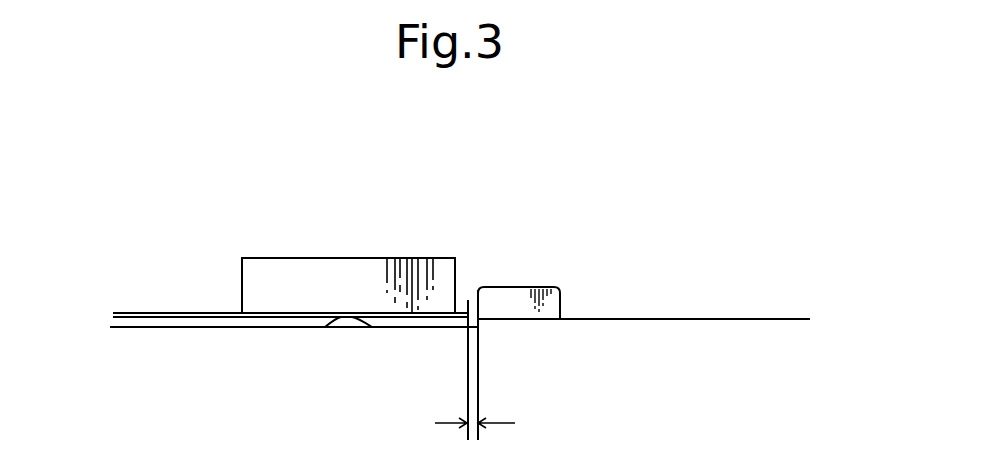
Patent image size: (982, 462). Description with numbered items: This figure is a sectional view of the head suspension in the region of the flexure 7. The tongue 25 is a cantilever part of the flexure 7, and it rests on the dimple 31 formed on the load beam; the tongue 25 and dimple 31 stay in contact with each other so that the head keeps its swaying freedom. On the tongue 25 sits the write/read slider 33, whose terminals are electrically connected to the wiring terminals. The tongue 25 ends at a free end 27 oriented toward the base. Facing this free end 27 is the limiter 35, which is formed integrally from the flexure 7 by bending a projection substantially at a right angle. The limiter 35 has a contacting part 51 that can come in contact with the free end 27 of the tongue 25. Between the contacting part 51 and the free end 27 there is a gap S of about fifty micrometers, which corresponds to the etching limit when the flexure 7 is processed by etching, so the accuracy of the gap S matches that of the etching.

The flexure 7 is at (654, 316).
The tongue 25 is at (158, 313).
The free end 27 is at (468, 302).
The dimple 31 is at (334, 317).
The write/read slider 33 is at (372, 257).
The limiter 35 is at (522, 287).
The contacting part 51 is at (478, 292).
The gap S is at (488, 424).